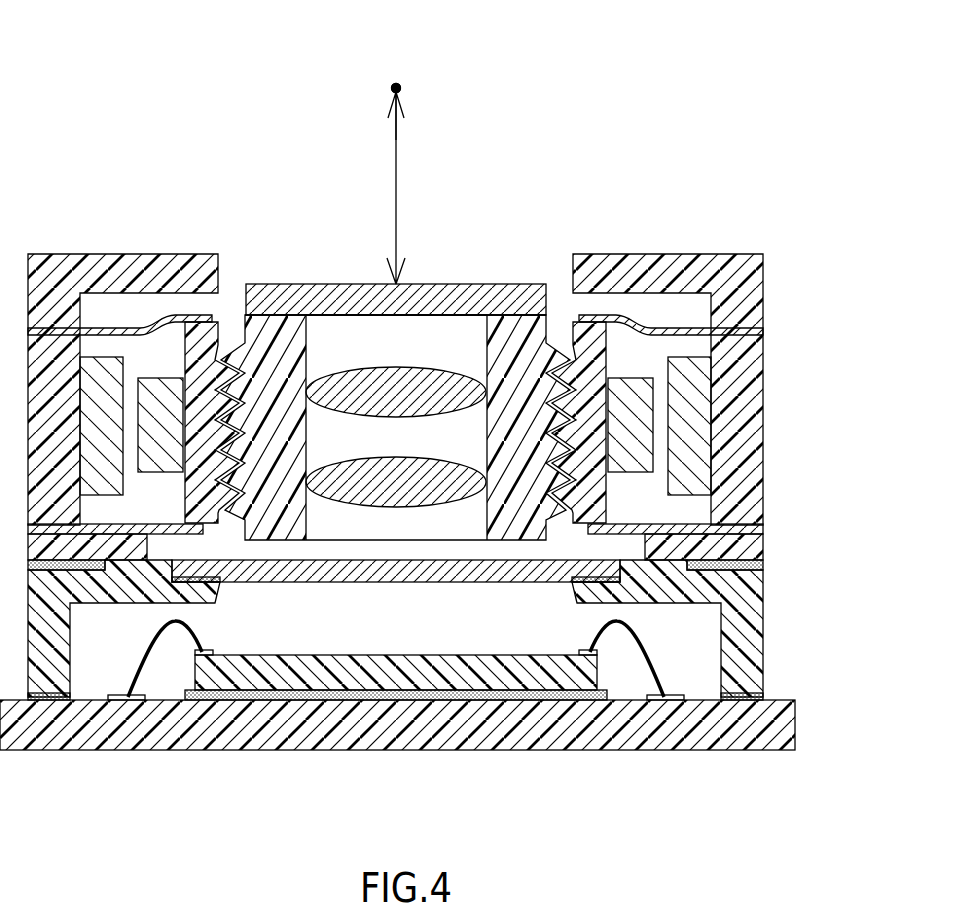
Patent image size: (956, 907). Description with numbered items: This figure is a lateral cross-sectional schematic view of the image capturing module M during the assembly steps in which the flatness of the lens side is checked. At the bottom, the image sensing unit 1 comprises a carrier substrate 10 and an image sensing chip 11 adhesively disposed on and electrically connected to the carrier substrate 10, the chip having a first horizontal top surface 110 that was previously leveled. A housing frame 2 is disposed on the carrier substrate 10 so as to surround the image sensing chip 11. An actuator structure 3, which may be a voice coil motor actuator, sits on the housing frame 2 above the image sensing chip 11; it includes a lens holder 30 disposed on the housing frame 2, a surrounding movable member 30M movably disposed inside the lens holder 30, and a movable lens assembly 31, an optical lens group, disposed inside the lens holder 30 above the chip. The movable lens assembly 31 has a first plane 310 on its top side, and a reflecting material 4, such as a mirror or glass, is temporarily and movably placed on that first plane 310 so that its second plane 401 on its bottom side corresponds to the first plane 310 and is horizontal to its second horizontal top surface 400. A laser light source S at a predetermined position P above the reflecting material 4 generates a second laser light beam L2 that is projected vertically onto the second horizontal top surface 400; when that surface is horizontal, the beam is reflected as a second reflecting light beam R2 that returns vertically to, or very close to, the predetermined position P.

The image capturing module M is at (64, 34).
The image sensing unit 1 is at (360, 800).
The carrier substrate 10 is at (370, 738).
The image sensing chip 11 is at (428, 702).
The first horizontal top surface 110 is at (298, 655).
The housing frame 2 is at (777, 609).
The actuator structure 3 is at (540, 188).
The lens holder 30 is at (603, 262).
The surrounding movable member 30M is at (212, 349).
The movable lens assembly 31 is at (511, 340).
The first plane 310 is at (288, 312).
The reflecting material 4 is at (490, 273).
The second horizontal top surface 400 is at (430, 284).
The second plane 401 is at (441, 316).
The second laser light beam L2 is at (386, 233).
The predetermined position P is at (382, 78).
The laser light source S is at (410, 78).
The second reflecting light beam R2 is at (410, 147).